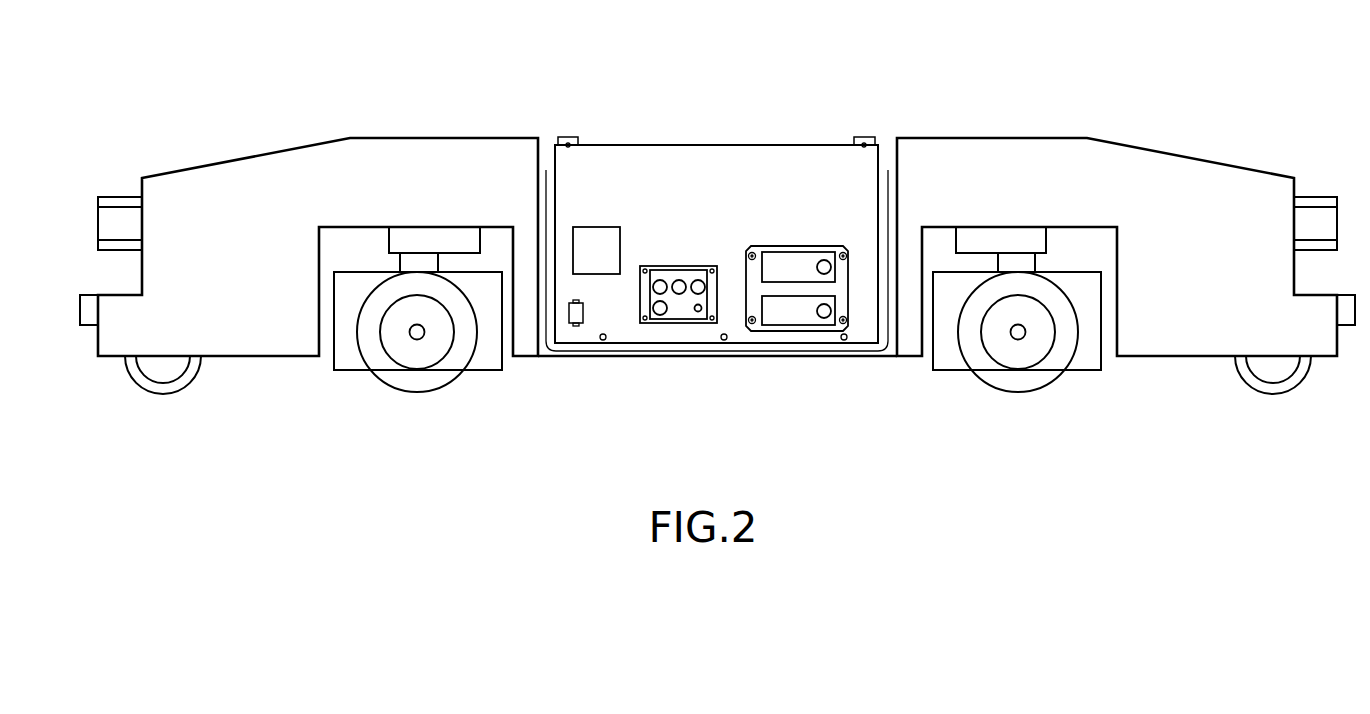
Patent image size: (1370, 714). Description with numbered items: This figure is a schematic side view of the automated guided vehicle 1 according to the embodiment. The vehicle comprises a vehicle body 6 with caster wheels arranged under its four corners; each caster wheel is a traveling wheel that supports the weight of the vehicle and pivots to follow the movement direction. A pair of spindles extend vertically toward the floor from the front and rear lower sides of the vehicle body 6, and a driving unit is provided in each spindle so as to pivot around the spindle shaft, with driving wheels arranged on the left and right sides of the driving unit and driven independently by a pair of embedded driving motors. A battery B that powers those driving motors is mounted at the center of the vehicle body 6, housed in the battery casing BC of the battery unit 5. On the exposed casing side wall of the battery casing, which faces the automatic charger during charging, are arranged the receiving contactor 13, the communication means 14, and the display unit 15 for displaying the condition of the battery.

The automated guided vehicle 1 is at (717, 202).
The battery unit 5 is at (735, 146).
The vehicle body 6 is at (1090, 162).
The receiving contactor 13 is at (787, 313).
The communication means 14 is at (583, 255).
The display unit 15 is at (682, 312).